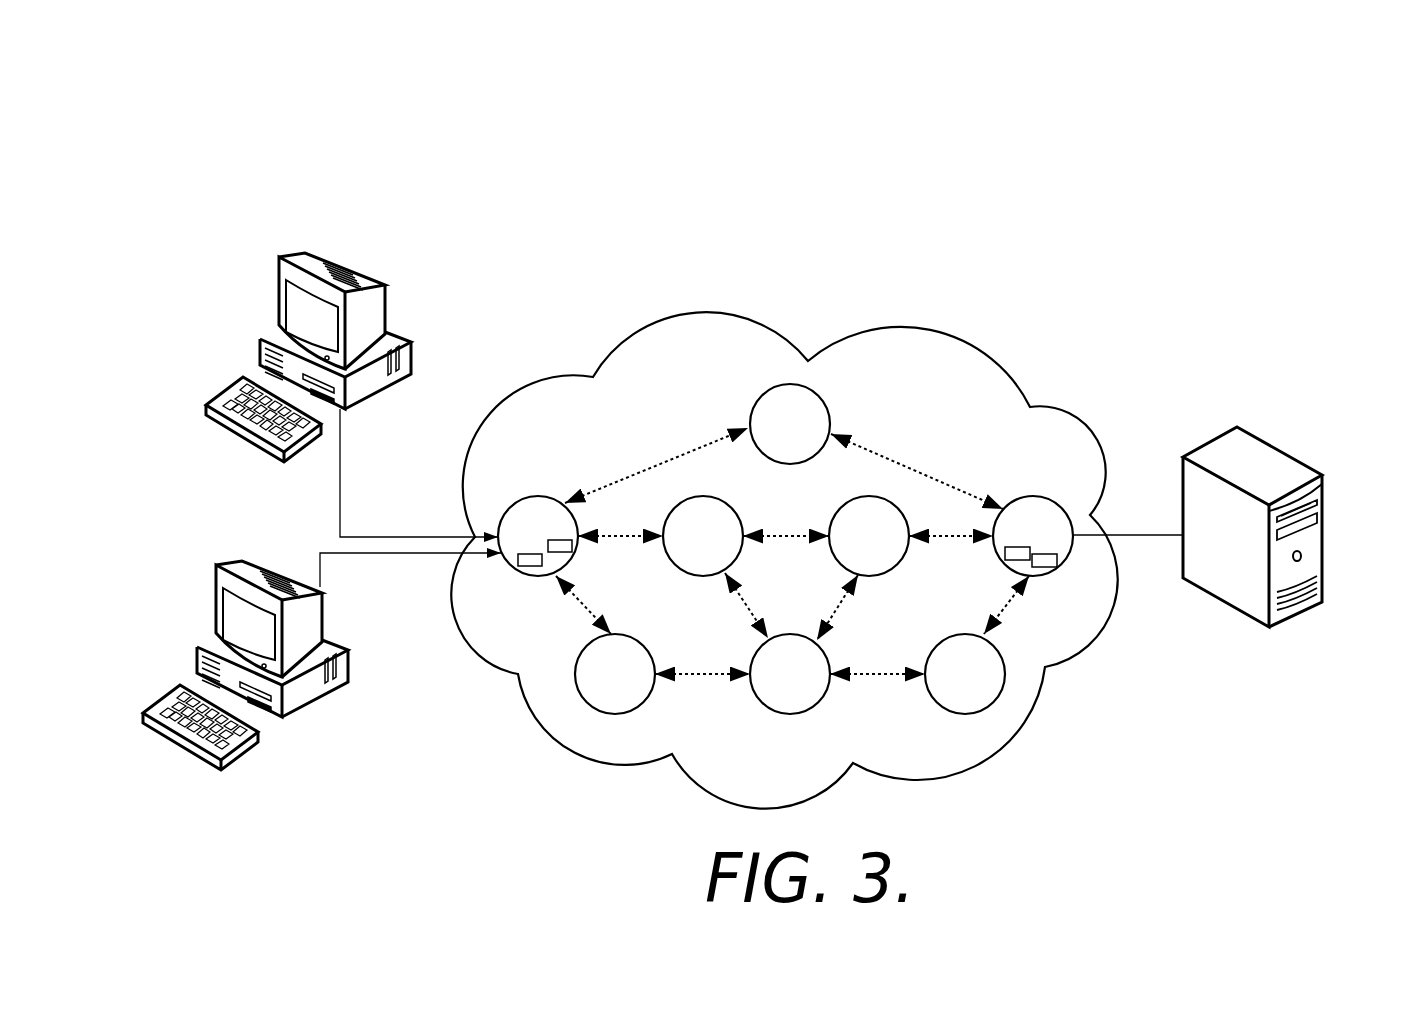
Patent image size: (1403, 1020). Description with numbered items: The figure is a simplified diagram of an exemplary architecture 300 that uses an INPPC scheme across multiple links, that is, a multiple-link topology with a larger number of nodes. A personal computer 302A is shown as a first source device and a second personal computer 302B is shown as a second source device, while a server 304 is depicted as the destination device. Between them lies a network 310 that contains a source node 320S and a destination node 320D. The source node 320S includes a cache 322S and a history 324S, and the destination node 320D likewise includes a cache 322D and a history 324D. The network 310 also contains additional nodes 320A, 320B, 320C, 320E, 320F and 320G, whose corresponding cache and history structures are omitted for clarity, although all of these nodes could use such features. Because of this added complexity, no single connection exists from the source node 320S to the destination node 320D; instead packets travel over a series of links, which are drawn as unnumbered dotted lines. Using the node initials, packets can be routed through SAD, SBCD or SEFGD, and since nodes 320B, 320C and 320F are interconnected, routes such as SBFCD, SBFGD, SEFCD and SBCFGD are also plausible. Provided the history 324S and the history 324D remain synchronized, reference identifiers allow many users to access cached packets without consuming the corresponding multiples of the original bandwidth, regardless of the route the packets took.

The architecture 300 is at (1134, 111).
The personal computer 302A is at (275, 295).
The personal computer 302B is at (210, 606).
The server 304 is at (1323, 515).
The network 310 is at (913, 328).
The source node 320S is at (537, 496).
The node 320A is at (772, 388).
The node 320B is at (736, 562).
The node 320C is at (839, 503).
The destination node 320D is at (1043, 476).
The node 320E is at (612, 713).
The node 320F is at (770, 713).
The node 320G is at (952, 712).
The cache 322S is at (515, 560).
The history 324S is at (574, 546).
The cache 322D is at (1057, 565).
The history 324D is at (1005, 557).